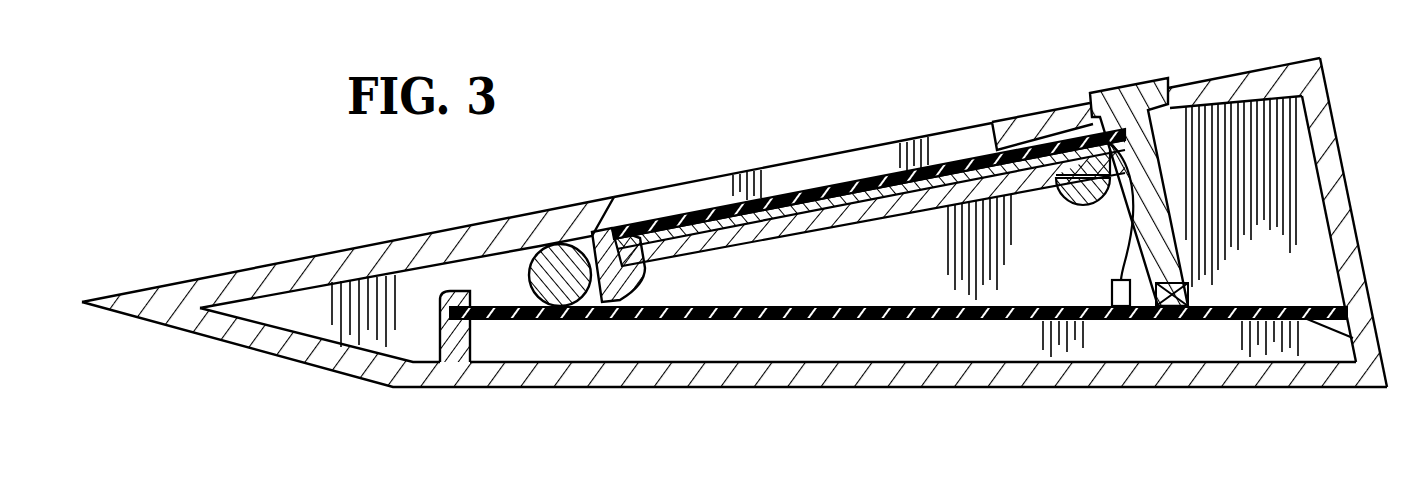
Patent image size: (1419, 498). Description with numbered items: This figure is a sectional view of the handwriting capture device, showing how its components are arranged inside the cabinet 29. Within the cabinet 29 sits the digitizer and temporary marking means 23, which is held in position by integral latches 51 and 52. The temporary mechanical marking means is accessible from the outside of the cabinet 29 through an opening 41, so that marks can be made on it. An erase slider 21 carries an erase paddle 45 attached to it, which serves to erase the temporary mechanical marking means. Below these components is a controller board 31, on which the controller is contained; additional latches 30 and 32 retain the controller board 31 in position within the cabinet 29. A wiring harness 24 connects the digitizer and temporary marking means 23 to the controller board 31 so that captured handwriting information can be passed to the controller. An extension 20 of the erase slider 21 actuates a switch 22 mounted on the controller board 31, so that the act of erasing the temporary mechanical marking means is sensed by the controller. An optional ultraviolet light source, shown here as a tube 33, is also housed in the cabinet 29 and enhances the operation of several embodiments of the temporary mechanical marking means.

The extension 20 is at (1178, 262).
The erase slider 21 is at (1130, 87).
The switch 22 is at (1170, 318).
The digitizer and temporary marking means 23 is at (868, 184).
The wiring harness 24 is at (1130, 242).
The cabinet 29 is at (314, 257).
The latch 30 is at (1323, 285).
The controller board 31 is at (783, 318).
The latch 32 is at (462, 302).
The tube 33 is at (548, 241).
The opening 41 is at (812, 168).
The erase paddle 45 is at (958, 161).
The integral latch 51 is at (642, 283).
The integral latch 52 is at (1077, 200).